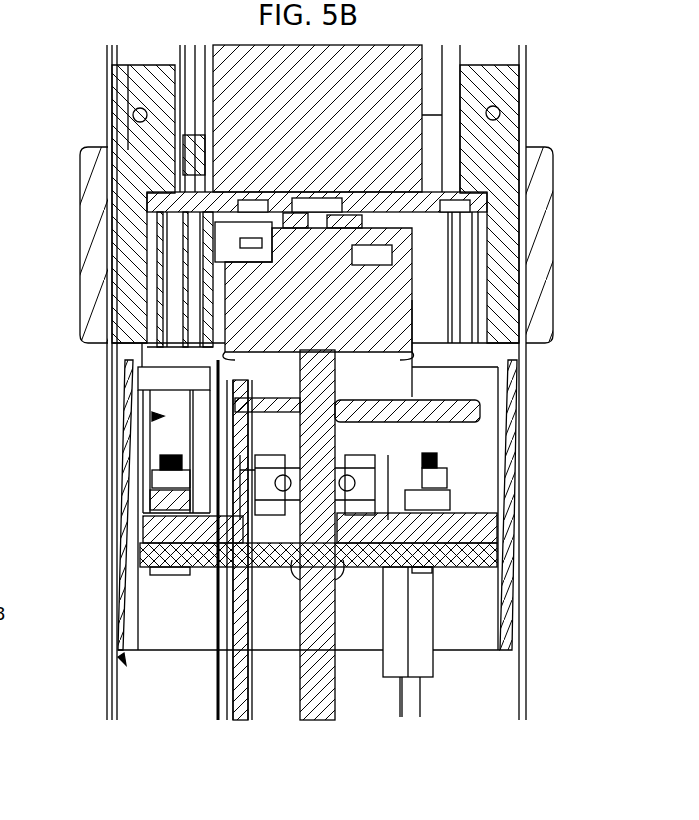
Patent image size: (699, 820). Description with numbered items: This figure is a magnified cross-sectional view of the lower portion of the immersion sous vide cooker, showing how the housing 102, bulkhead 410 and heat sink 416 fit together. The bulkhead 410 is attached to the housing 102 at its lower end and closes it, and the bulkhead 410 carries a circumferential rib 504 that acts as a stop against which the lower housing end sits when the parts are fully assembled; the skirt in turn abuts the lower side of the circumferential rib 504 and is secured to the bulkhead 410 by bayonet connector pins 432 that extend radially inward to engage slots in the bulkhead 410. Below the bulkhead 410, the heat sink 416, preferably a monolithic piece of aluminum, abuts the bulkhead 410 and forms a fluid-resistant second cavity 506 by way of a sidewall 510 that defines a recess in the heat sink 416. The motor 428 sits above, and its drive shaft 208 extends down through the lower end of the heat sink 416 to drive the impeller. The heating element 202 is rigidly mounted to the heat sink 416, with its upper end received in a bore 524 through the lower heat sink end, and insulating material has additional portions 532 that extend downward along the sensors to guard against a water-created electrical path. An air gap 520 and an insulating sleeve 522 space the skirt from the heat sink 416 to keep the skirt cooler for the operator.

The housing 102 is at (112, 77).
The circumferential rib 504 is at (108, 150).
The heat sink 416 is at (140, 512).
The pins 432 is at (112, 255).
The bulkhead 410 is at (112, 303).
The motor 428 is at (237, 323).
The second cavity 506 is at (138, 413).
The sidewall 510 is at (150, 428).
The bore 524 is at (143, 520).
The air gap 520 is at (128, 665).
The heating element 202 is at (215, 683).
The drive shaft 208 is at (345, 705).
The additional portions 532 is at (423, 632).
The insulating sleeve 522 is at (512, 597).